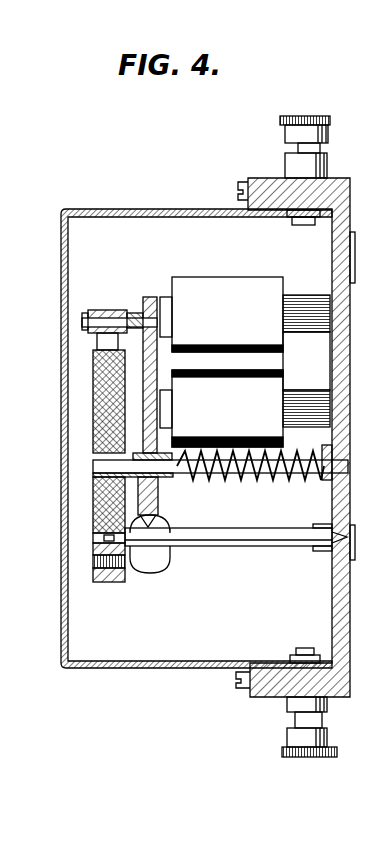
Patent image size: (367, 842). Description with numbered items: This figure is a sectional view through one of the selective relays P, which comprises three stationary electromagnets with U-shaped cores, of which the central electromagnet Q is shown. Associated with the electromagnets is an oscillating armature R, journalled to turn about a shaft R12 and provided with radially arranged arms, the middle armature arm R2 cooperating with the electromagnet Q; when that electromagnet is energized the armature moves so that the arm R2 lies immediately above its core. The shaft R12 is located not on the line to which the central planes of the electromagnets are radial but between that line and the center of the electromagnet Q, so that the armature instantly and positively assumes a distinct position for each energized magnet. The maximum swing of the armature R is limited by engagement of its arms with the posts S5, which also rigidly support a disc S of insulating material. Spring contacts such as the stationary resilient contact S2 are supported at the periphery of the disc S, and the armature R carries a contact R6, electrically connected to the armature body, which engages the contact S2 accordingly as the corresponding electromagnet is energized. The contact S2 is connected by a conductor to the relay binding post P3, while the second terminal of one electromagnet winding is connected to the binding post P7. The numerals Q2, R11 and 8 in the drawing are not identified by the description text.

The selective relay P is at (158, 210).
The binding post P3 is at (297, 168).
The binding post P7 is at (295, 705).
The electromagnet Q is at (245, 346).
The coil winding Q2 is at (317, 357).
The oscillating armature R is at (158, 500).
The armature arm R2 is at (147, 297).
The armature contact R6 is at (107, 298).
The knob R11 is at (150, 572).
The armature shaft R12 is at (242, 477).
The insulating disc S is at (93, 418).
The stationary resilient contact S2 is at (107, 348).
The post S5 is at (192, 538).
The spring 8 is at (280, 473).